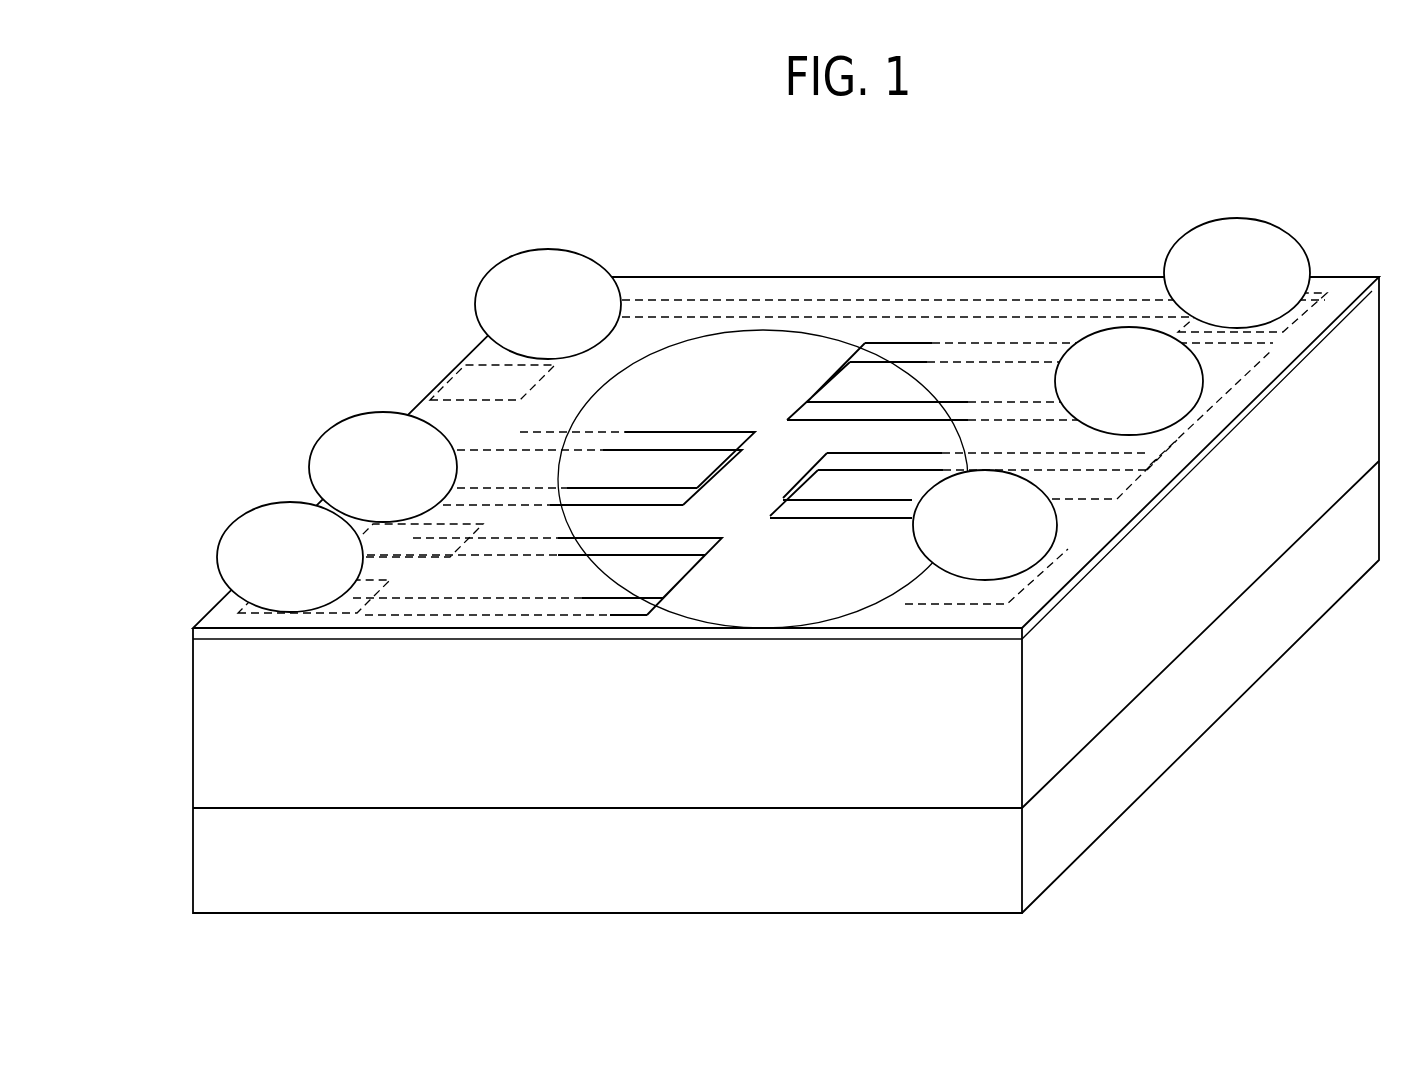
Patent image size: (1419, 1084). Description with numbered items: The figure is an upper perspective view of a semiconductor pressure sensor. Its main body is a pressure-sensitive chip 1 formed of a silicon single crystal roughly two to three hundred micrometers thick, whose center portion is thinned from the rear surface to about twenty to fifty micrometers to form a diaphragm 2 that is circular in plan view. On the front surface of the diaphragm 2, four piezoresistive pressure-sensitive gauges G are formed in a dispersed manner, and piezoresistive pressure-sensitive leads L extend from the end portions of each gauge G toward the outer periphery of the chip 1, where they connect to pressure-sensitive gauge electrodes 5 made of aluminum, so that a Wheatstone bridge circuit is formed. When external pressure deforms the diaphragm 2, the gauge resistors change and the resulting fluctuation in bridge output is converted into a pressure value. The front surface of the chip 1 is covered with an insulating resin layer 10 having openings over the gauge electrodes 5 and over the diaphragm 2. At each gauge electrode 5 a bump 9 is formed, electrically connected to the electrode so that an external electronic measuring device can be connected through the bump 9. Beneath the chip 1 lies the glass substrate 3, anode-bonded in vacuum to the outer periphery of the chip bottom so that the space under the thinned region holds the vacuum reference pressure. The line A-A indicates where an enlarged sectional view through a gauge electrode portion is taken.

The pressure-sensitive chip 1 is at (203, 727).
The diaphragm 2 is at (745, 368).
The glass substrate 3 is at (203, 857).
The pressure-sensitive gauge electrodes 5 is at (477, 400).
The bump 9 is at (547, 255).
The insulating resin layer 10 is at (193, 631).
The piezoresistive pressure-sensitive leads L is at (627, 595).
The piezoresistive pressure-sensitive gauges G is at (806, 476).
The line A- A is at (1077, 543).